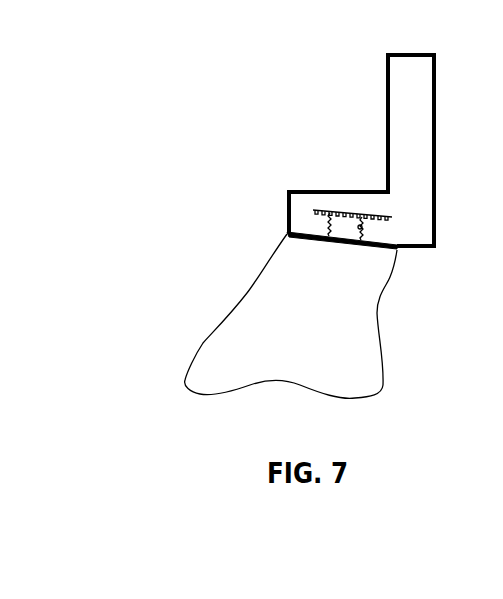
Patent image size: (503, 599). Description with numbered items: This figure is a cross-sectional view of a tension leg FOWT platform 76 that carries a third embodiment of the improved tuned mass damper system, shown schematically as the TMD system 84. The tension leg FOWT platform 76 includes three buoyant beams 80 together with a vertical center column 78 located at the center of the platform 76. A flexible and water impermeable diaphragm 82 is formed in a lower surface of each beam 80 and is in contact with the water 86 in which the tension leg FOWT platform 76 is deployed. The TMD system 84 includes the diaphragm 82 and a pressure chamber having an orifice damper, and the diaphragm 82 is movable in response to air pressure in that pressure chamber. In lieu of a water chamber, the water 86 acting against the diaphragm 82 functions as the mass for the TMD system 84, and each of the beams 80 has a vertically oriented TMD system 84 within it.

The tension leg FOWT platform 76 is at (354, 152).
The vertical center column 78 is at (422, 68).
The buoyant beam 80 is at (285, 213).
The diaphragm 82 is at (372, 240).
The TMD system 84 is at (345, 204).
The water 86 is at (367, 337).